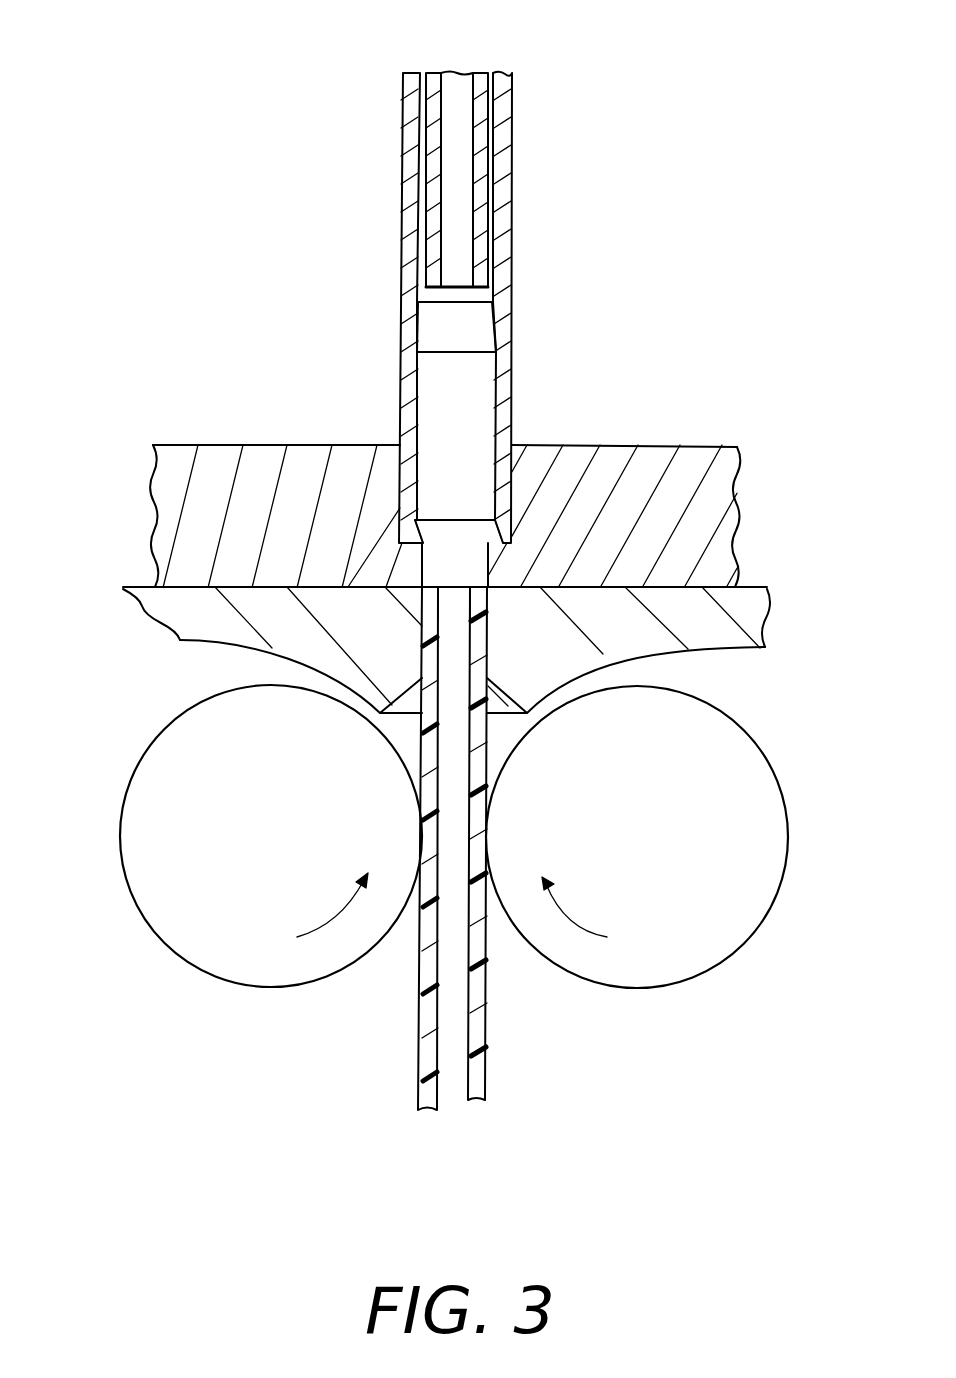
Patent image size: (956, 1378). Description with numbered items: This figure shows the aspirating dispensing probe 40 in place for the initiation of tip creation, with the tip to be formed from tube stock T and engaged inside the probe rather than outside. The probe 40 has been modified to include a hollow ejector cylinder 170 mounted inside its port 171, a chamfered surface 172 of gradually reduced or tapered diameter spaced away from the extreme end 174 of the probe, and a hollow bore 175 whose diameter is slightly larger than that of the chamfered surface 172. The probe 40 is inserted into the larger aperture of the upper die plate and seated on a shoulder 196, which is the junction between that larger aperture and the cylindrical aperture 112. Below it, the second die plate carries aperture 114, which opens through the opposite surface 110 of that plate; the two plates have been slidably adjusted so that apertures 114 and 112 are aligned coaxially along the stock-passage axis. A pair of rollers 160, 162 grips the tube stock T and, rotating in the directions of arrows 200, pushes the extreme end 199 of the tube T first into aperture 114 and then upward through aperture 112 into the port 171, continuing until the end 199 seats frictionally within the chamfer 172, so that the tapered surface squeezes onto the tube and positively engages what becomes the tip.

The dispensing probe 40 is at (400, 287).
The hollow ejector cylinder 170 is at (487, 73).
The chamfered surface 172 is at (424, 330).
The hollow bore 175 is at (424, 395).
The port 171 is at (532, 517).
The shoulder 196 is at (420, 521).
The extreme end 174 is at (497, 515).
The extreme end of tube stock 199 is at (428, 590).
The aperture 112 is at (485, 580).
The surface 110 is at (232, 627).
The aperture 114 is at (478, 640).
The tube stock T is at (418, 1018).
The roller 160 is at (157, 886).
The roller 162 is at (754, 893).
The arrows 200 is at (322, 927).